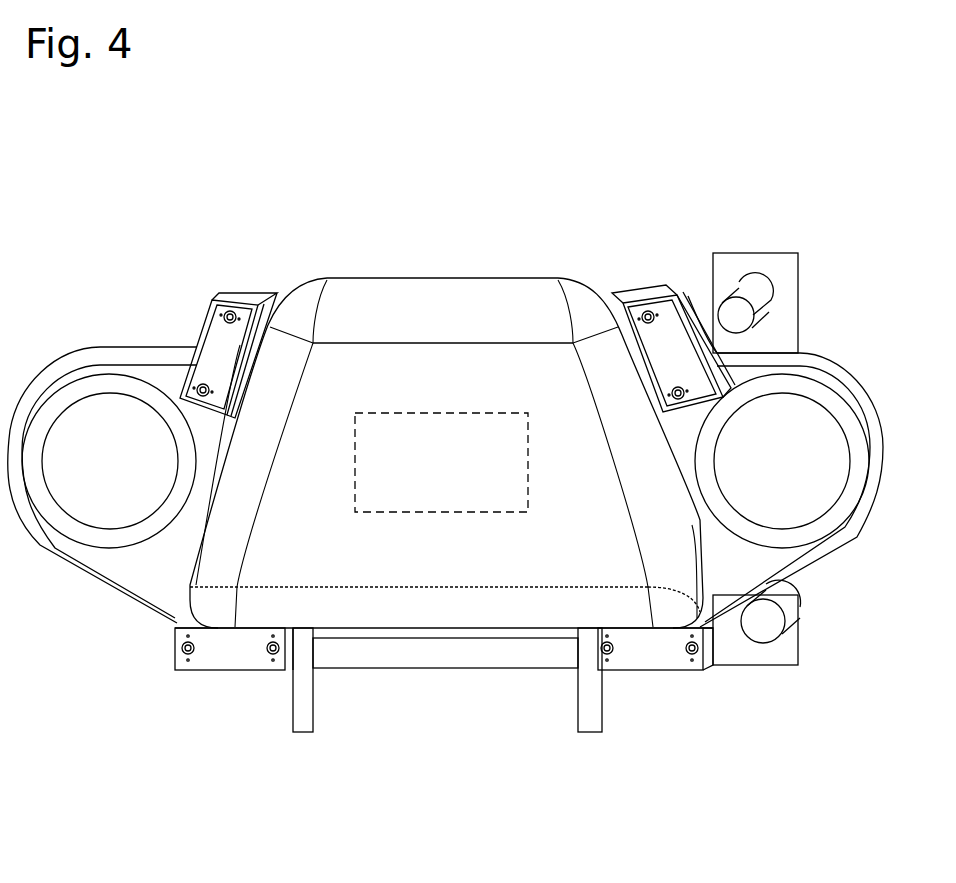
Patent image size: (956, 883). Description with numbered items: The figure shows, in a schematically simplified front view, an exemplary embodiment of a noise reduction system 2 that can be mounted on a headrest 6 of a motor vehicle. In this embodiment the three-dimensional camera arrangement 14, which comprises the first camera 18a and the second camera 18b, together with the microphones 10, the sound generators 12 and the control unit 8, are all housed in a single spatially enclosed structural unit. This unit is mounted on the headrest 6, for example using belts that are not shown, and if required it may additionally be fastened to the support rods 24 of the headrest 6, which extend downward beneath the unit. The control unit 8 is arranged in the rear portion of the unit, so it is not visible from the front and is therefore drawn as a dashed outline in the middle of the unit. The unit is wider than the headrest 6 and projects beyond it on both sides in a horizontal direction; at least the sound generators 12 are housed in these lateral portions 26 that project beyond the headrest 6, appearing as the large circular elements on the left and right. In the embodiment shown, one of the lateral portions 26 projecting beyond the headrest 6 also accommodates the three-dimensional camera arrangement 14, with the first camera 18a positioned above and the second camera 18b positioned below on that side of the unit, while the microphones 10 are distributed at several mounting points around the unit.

The noise reduction system 2 is at (630, 297).
The headrest 6 is at (516, 290).
The control unit 8 is at (430, 440).
The microphones 10 is at (202, 383).
The sound generators 12 is at (68, 398).
The 3D camera arrangement 14 is at (784, 468).
The first camera 18a is at (758, 293).
The second camera 18b is at (764, 627).
The support rods 24 is at (588, 708).
The lateral portions 26 is at (117, 346).